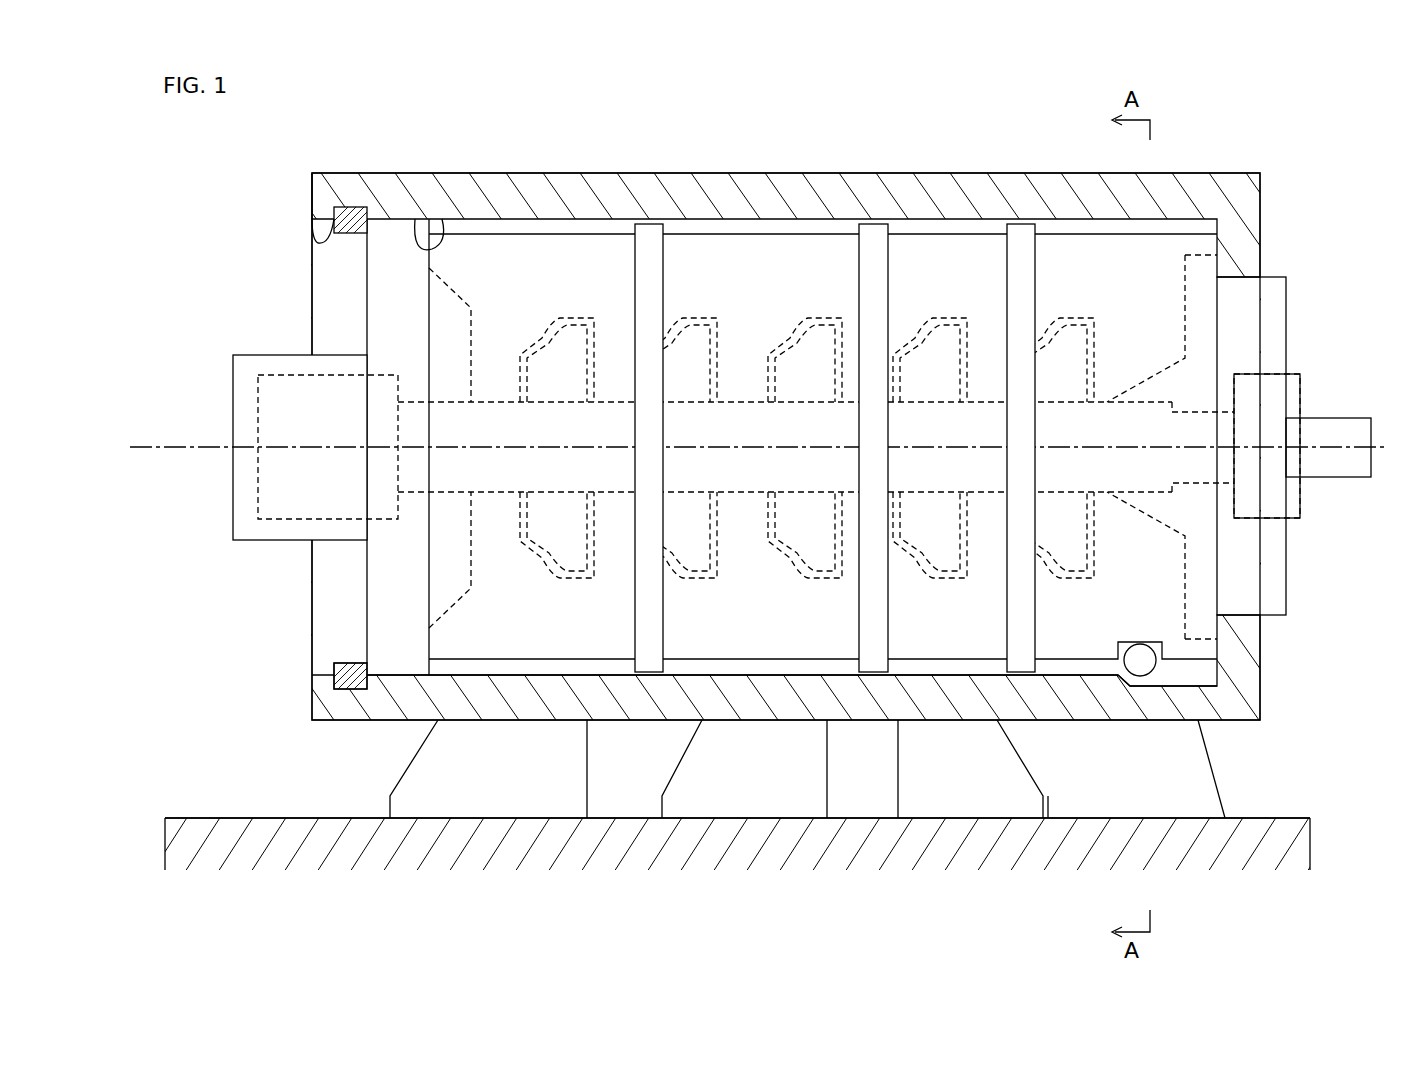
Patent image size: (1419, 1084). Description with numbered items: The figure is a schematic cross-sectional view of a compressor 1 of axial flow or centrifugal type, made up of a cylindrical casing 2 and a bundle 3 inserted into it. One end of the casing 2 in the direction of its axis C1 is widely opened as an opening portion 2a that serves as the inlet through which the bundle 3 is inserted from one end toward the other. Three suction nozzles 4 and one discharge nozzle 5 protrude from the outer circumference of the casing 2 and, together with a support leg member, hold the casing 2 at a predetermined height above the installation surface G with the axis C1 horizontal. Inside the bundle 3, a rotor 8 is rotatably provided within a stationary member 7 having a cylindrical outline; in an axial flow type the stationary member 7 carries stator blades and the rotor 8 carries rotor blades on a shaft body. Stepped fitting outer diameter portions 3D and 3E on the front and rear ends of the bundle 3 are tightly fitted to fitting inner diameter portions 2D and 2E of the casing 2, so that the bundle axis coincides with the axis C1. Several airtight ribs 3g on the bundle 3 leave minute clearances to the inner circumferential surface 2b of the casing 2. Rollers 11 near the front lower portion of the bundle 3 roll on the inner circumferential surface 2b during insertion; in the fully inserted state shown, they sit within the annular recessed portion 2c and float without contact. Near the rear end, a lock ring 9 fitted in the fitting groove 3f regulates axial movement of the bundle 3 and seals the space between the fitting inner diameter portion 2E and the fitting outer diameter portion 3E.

The compressor 1 is at (620, 152).
The casing 2 is at (522, 170).
The opening portion 2a is at (334, 222).
The inner circumferential surface 2b is at (760, 655).
The recessed portion 2c is at (1200, 682).
The fitting inner diameter portion 2D is at (1245, 278).
The fitting inner diameter portion 2E is at (440, 220).
The bundle 3 is at (816, 422).
The fitting outer diameter portion 3D is at (1262, 275).
The fitting outer diameter portion 3E is at (392, 218).
The fitting groove 3f is at (360, 685).
The airtight ribs 3g is at (645, 625).
The suction nozzles 4 is at (500, 790).
The discharge nozzle 5 is at (1192, 800).
The stationary member 7 is at (732, 233).
The rotor 8 is at (741, 401).
The lock ring 9 is at (338, 670).
The rollers 11 is at (1150, 658).
The axis C1 is at (180, 447).
The installation surface G is at (1265, 815).